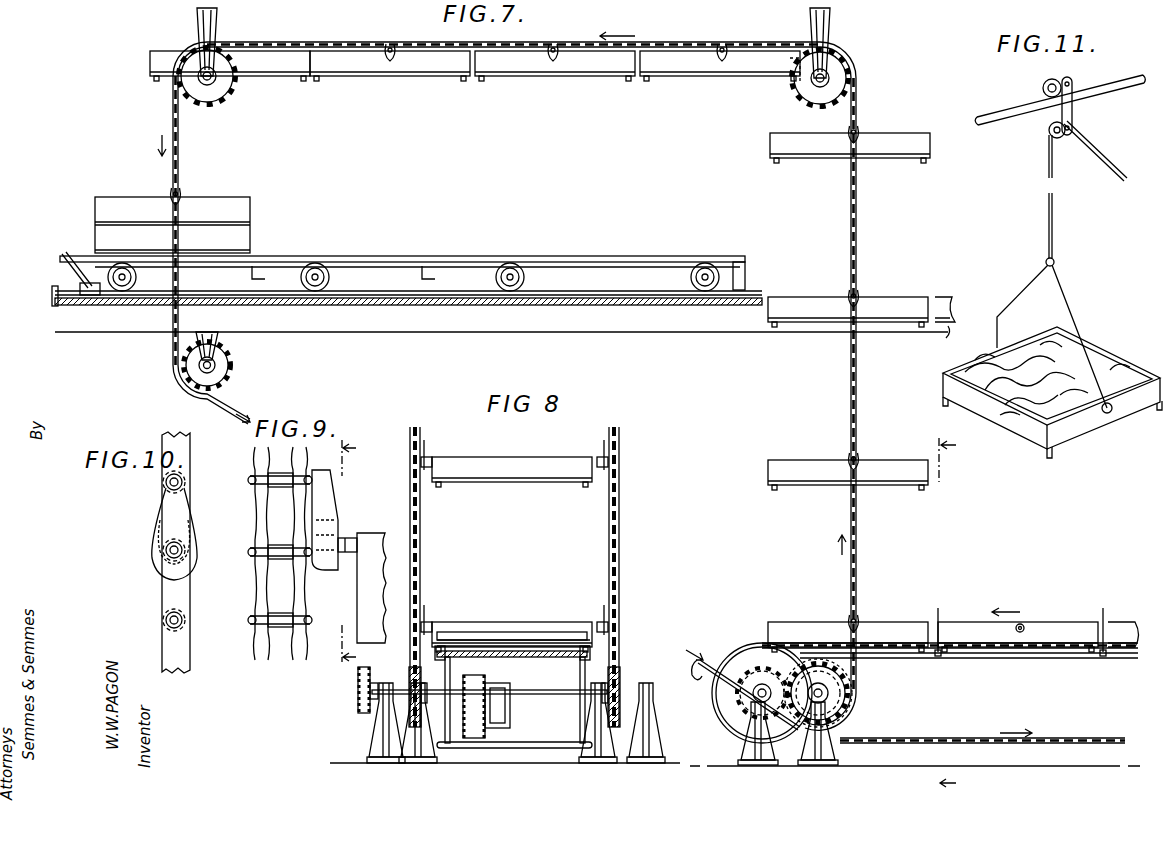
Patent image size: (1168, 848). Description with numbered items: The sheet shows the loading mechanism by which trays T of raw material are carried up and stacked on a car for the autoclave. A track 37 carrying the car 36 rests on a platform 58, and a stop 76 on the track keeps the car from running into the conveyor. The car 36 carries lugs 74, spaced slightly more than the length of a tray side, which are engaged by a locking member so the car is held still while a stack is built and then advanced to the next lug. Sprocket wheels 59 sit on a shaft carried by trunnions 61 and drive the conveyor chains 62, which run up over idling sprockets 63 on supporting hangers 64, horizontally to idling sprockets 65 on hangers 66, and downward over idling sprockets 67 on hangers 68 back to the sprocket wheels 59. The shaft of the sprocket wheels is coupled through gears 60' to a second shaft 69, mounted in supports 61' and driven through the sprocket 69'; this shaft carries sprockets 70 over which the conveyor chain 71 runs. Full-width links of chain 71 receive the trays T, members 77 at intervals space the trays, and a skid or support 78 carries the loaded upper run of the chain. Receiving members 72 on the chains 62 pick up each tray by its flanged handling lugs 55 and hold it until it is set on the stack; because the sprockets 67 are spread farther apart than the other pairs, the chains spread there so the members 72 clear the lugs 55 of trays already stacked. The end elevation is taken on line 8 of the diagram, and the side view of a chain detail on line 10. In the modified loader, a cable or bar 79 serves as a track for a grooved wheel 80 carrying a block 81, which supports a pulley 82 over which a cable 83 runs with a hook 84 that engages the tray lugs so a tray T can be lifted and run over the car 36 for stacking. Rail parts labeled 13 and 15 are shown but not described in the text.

In FIG. 7, the conveyor chains 62 is at (378, 44).
In FIG. 8, the conveyor chains 62 is at (422, 526).
In FIG. 9, the conveyor chains 62 is at (256, 528).
In FIG. 10, the conveyor chains 62 is at (190, 598).
In FIG. 7, the idling sprockets 63 is at (846, 68).
In FIG. 7, the supporting hangers 64 is at (832, 30).
In FIG. 7, the idling sprockets 65 is at (226, 94).
In FIG. 7, the supporting hangers 66 is at (218, 30).
In FIG. 7, the idling sprockets 67 is at (232, 372).
In FIG. 7, the supporting hangers 68 is at (220, 346).
In FIG. 7, the receiving members 72 is at (392, 62).
In FIG. 9, the receiving members 72 is at (330, 528).
In FIG. 10, the receiving members 72 is at (160, 510).
In FIG. 7, the trays T is at (150, 64).
In FIG. 8, the trays T is at (530, 462).
In FIG. 9, the trays T is at (364, 596).
In FIG. 11, the trays T is at (1110, 372).
In FIG. 7, the car 36 is at (94, 250).
In FIG. 7, the lugs 74 is at (256, 270).
In FIG. 7, the stop 76 is at (745, 288).
In FIG. 7, the track 37 is at (48, 292).
In FIG. 7, the track rail 13 is at (60, 304).
In FIG. 7, the lever 15 is at (66, 256).
In FIG. 7, the platform 58 is at (328, 334).
In FIG. 7, the shaft 69 is at (762, 683).
In FIG. 8, the sprocket 69' is at (354, 690).
In FIG. 7, the skid or support 78 is at (992, 654).
In FIG. 8, the skid or support 78 is at (515, 660).
In FIG. 7, the conveyor chain 71 is at (1070, 660).
In FIG. 8, the conveyor chain 71 is at (600, 644).
In FIG. 7, the sprocket wheels 59 is at (853, 693).
In FIG. 8, the sprocket wheels 59 is at (408, 670).
In FIG. 7, the gears 60' is at (842, 693).
In FIG. 8, the gears 60' is at (489, 700).
In FIG. 7, the trunnions 61 is at (915, 749).
In FIG. 8, the trunnions 61 is at (505, 723).
In FIG. 7, the supports 61' is at (743, 733).
In FIG. 8, the supports 61' is at (508, 723).
In FIG. 7, the sprockets 70 is at (726, 714).
In FIG. 8, the sprockets 70 is at (592, 672).
In FIG. 7, the spacing members 77 is at (941, 614).
In FIG. 8, the spacing members 77 is at (550, 638).
In FIG. 7, the lugs 55 is at (1024, 626).
In FIG. 10, the lugs 55 is at (152, 555).
In FIG. 11, the lugs 55 is at (1108, 414).
In FIG. 7, the section line 8— 8 is at (954, 616).
In FIG. 9, the section line 10— 10 is at (360, 554).
In FIG. 11, the cable or bar 79 is at (1120, 92).
In FIG. 11, the grooved wheel 80 is at (1062, 86).
In FIG. 11, the block 81 is at (1070, 112).
In FIG. 11, the pulley 82 is at (1058, 140).
In FIG. 11, the cable 83 is at (1118, 172).
In FIG. 11, the hook 84 is at (1076, 294).